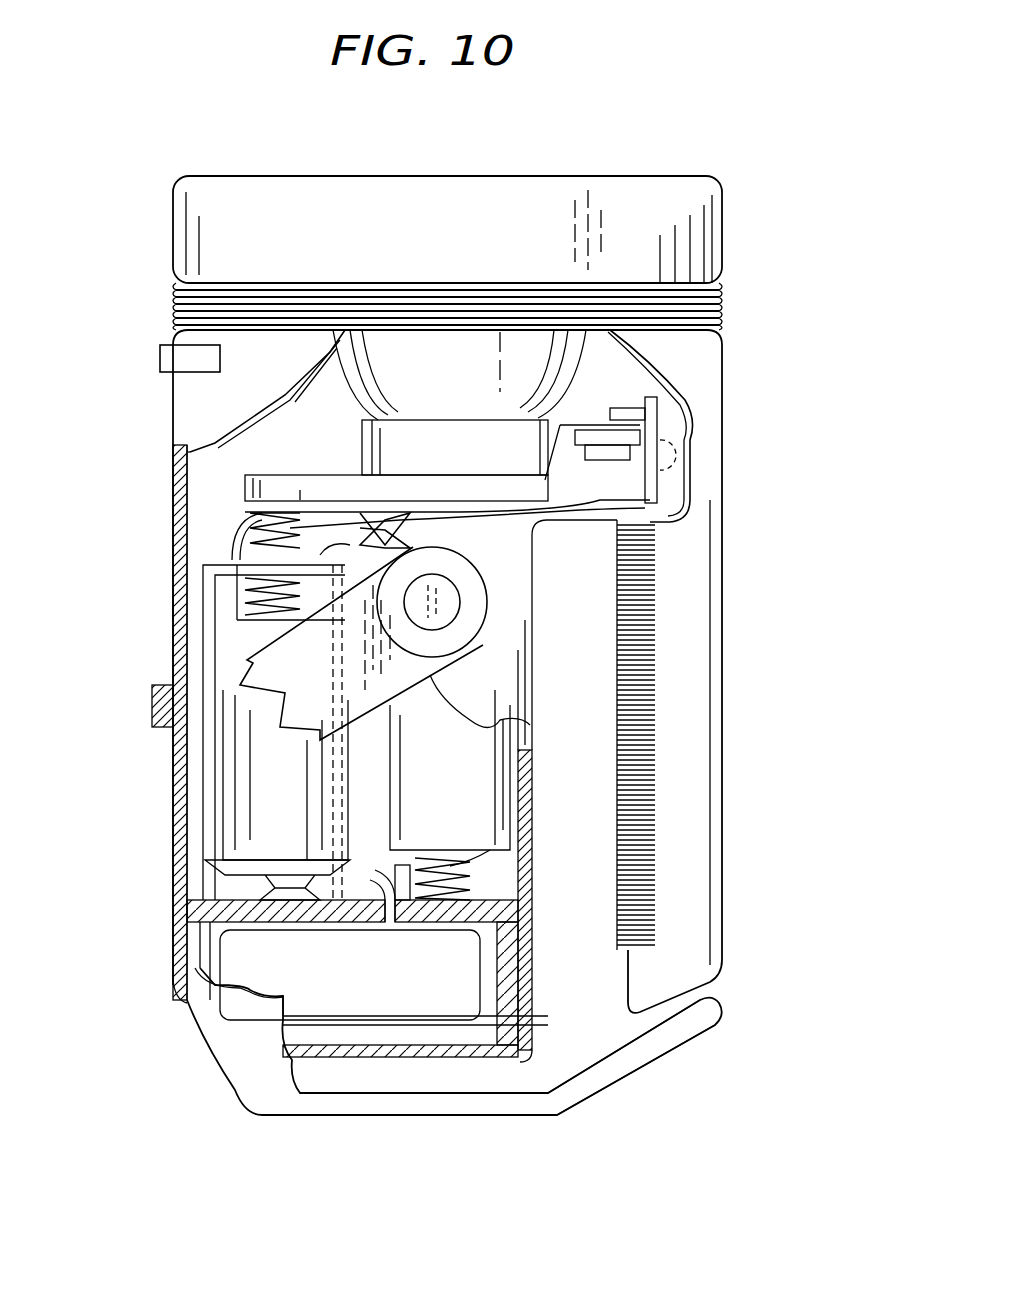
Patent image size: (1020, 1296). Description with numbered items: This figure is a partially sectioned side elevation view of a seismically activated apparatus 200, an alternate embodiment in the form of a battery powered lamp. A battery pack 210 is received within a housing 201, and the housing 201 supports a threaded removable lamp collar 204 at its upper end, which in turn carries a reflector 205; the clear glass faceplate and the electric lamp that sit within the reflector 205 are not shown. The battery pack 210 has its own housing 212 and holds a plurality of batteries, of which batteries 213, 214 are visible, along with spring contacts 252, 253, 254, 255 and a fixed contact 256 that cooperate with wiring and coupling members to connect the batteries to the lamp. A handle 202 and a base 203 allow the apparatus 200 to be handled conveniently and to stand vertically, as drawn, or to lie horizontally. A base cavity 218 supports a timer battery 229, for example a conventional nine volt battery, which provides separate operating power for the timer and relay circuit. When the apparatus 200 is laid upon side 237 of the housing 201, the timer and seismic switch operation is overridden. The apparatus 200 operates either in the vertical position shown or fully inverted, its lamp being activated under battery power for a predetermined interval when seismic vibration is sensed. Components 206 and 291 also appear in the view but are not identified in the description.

The seismically activated apparatus 200 is at (162, 624).
The housing 201 is at (697, 370).
The handle 202 is at (650, 750).
The base 203 is at (642, 1075).
The threaded removable lamp collar 204 is at (685, 200).
The reflector 205 is at (445, 350).
The lever 206 is at (475, 615).
The battery pack 210 is at (220, 523).
The housing of battery pack 212 is at (215, 588).
The battery 213 is at (297, 808).
The battery 214 is at (462, 808).
The base cavity 218 is at (393, 1030).
The timer battery 229 is at (280, 975).
The side of housing 237 is at (172, 665).
The spring contact 252 is at (270, 525).
The spring contact 253 is at (385, 525).
The spring contact 254 is at (280, 620).
The spring contact 255 is at (460, 880).
The fixed contact 256 is at (280, 893).
The switch 291 is at (672, 427).